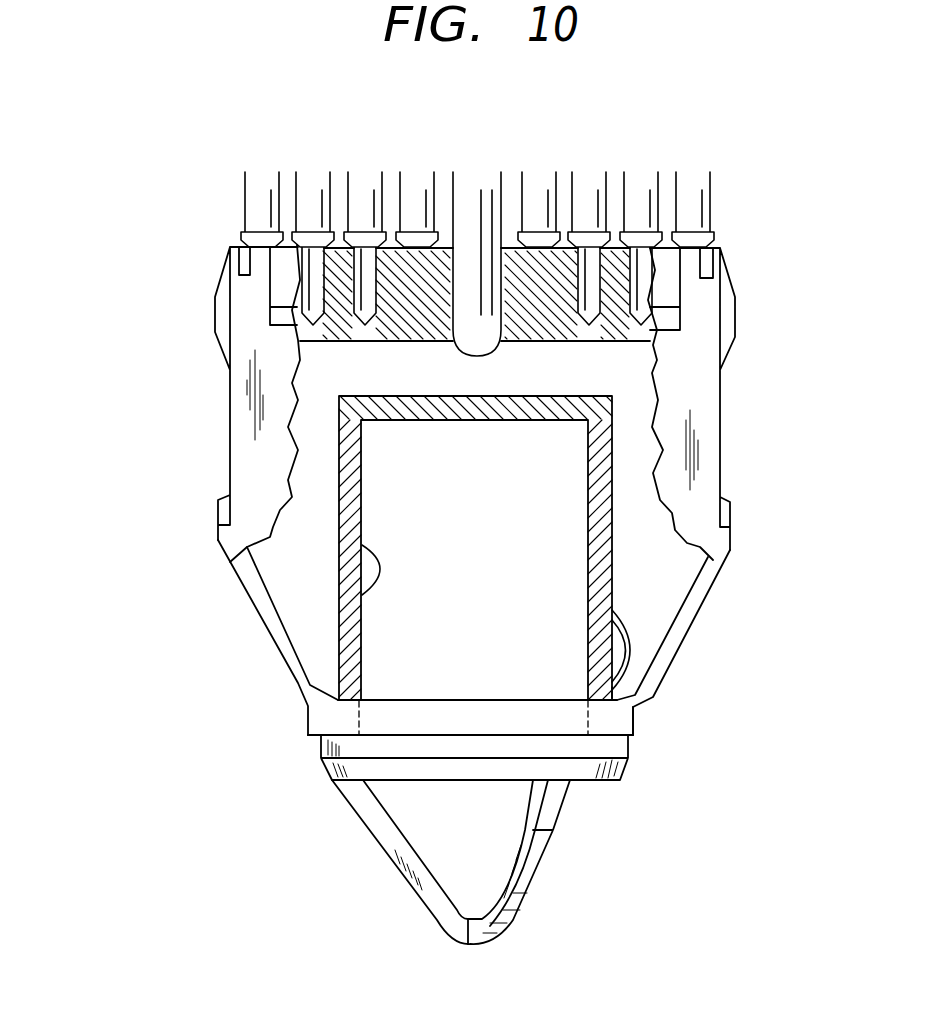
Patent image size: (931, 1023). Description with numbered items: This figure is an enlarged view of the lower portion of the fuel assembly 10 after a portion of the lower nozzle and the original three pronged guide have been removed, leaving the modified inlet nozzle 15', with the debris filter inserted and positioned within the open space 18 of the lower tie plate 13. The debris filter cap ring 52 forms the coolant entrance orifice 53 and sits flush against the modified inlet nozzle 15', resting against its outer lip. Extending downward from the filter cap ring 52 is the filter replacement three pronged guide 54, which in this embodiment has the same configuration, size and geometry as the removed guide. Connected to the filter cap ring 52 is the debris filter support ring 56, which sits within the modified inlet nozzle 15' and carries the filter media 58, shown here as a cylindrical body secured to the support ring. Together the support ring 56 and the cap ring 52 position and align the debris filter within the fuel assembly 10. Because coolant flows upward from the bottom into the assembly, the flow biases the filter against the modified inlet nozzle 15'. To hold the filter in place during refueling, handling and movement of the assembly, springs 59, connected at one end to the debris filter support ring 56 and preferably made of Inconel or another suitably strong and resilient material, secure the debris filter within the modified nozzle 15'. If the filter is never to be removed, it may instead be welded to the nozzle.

The fuel assembly 10 is at (148, 266).
The open space 18 is at (320, 467).
The lower tie plate 13 is at (563, 340).
The debris filter support ring 56 is at (375, 717).
The filter media 58 is at (345, 592).
The springs 59 is at (633, 657).
The modified inlet nozzle 15' is at (545, 715).
The debris filter cap ring 52 is at (633, 747).
The coolant entrance orifice 53 is at (400, 781).
The filter replacement three pronged guide 54 is at (400, 880).